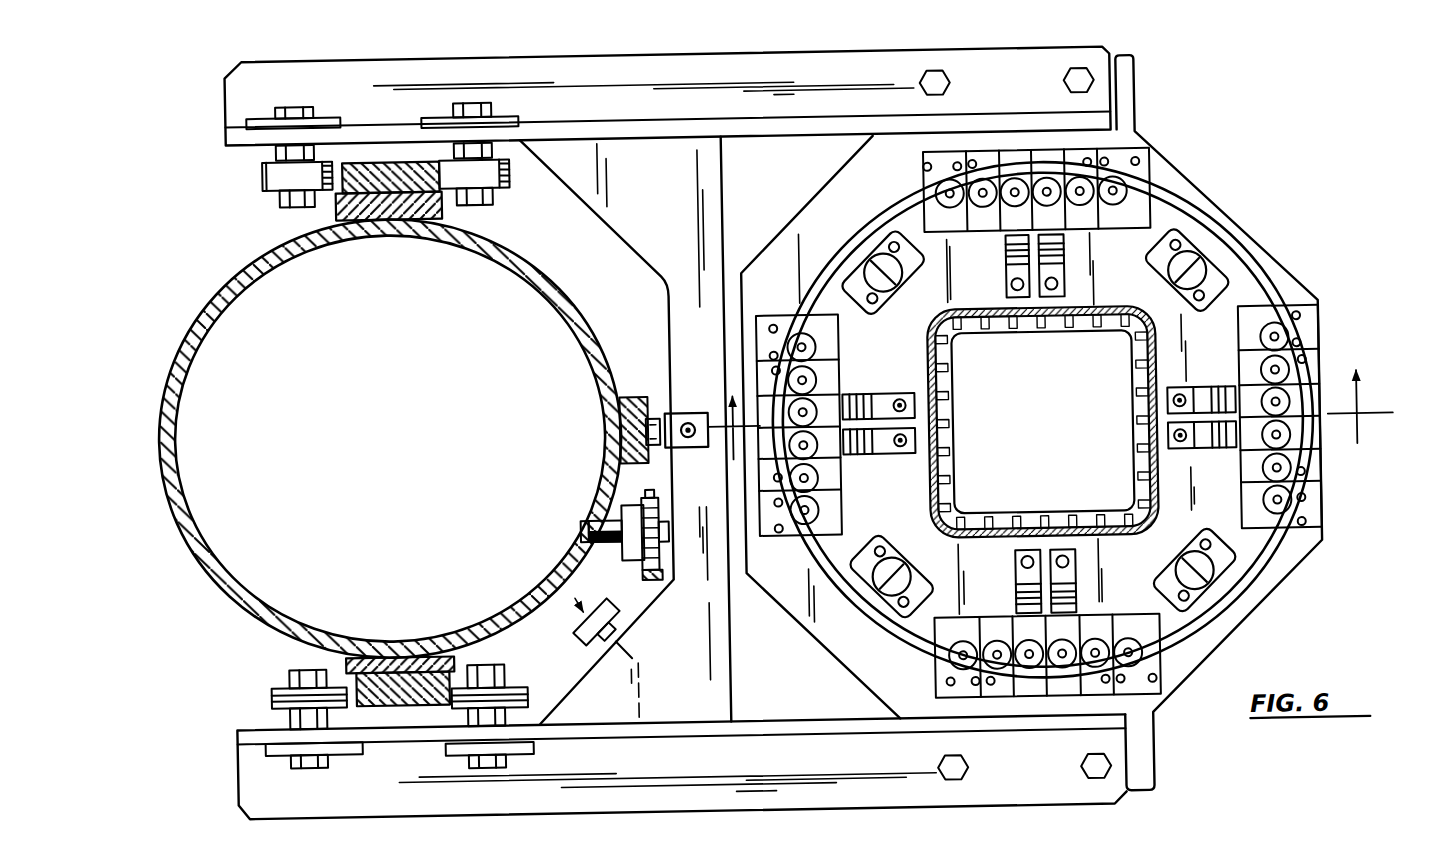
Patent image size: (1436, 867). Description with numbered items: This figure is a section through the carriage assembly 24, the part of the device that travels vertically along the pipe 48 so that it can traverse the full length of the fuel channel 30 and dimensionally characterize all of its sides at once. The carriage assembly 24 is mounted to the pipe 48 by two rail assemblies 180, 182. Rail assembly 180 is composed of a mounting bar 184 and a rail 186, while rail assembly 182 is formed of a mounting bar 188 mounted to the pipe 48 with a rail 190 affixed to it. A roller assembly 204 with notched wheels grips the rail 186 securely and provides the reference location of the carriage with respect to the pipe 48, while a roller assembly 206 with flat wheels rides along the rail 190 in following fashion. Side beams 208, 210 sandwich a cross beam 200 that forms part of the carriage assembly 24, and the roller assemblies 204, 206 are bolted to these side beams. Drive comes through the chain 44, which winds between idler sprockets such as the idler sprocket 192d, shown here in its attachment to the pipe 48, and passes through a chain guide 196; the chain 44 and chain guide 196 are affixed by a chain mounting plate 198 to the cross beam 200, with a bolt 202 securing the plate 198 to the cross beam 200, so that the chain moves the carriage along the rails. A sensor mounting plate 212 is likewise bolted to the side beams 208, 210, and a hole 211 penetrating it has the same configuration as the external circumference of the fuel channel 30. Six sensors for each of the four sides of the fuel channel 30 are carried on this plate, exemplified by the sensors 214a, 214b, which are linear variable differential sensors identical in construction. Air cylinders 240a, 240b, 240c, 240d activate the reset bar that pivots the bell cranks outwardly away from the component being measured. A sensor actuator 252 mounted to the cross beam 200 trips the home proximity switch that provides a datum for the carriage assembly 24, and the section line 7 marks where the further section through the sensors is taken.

The carriage assembly 24 is at (1064, 423).
The fuel channel 30 is at (968, 502).
The chain 44 is at (656, 395).
The pipe 48 is at (182, 446).
The rail assembly 180 is at (380, 681).
The rail assembly 182 is at (387, 192).
The mounting bar 184 is at (456, 657).
The rail 186 is at (428, 699).
The mounting bar 188 is at (448, 207).
The rail 190 is at (376, 158).
The idler sprocket 192d is at (630, 560).
The chain guide 196 is at (626, 465).
The chain mounting plate 198 is at (706, 450).
The cross beam 200 is at (689, 212).
The bolt 202 is at (700, 412).
The roller assembly 204 is at (261, 708).
The roller assembly 206 is at (257, 177).
The side beam 208 is at (703, 811).
The side beam 210 is at (688, 54).
The hole 211 is at (1052, 448).
The sensor mounting plate 212 is at (1278, 270).
The sensor 214a is at (1314, 372).
The sensor 214b is at (841, 399).
The air cylinder 240a is at (1206, 264).
The air cylinder 240b is at (872, 262).
The air cylinder 240c is at (876, 606).
The air cylinder 240d is at (1236, 604).
The sensor actuator 252 is at (590, 645).
The section line 7- 7 is at (1048, 408).